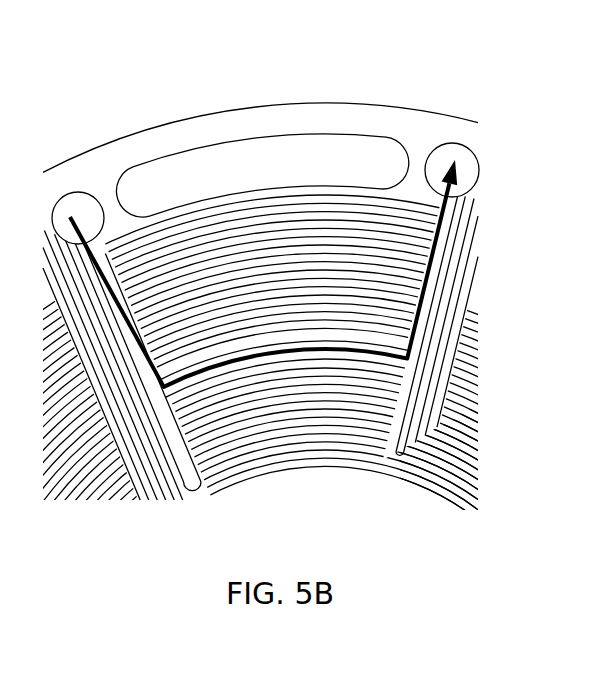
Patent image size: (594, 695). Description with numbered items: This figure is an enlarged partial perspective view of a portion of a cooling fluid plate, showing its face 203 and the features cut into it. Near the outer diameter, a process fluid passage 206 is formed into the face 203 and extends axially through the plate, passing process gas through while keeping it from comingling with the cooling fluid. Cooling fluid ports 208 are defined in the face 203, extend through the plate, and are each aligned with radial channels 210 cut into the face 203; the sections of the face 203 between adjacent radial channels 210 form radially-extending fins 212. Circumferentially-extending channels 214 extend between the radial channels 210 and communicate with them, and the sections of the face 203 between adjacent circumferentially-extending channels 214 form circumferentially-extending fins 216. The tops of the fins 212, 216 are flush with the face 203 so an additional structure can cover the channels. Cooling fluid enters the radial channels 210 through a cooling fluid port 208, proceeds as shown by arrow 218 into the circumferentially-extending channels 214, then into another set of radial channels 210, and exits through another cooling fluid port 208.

The face 203 is at (392, 122).
The process fluid passages 206 is at (317, 138).
The cooling fluid ports 208 is at (77, 192).
The radial channels 210 is at (183, 430).
The radially-extending fins 212 is at (112, 258).
The circumferentially-extending channels 214 is at (390, 387).
The circumferentially-extending fins 216 is at (365, 442).
The arrow 218 is at (425, 266).